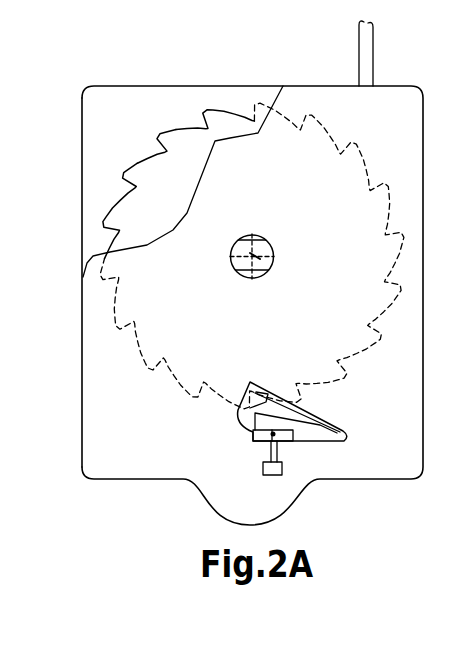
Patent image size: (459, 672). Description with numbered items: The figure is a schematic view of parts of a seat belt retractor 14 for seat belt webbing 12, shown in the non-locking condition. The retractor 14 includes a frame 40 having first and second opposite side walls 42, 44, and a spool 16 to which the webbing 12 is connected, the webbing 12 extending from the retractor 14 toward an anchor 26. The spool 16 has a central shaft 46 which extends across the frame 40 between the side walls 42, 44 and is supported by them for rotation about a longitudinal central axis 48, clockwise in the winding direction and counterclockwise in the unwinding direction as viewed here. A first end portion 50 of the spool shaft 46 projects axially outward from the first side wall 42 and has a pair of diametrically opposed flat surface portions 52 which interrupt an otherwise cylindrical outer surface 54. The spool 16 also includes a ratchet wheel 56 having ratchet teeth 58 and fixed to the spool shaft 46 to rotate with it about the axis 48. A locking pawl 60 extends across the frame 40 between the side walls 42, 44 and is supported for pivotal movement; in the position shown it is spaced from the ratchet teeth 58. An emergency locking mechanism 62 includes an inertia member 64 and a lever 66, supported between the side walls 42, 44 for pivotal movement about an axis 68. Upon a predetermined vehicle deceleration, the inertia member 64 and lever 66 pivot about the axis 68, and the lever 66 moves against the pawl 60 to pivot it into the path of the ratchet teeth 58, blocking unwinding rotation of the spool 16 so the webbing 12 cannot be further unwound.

The seat belt webbing 12 is at (388, 43).
The seat belt retractor 14 is at (233, 266).
The spool 16 is at (124, 167).
The anchor 26 is at (397, 55).
The frame 40 is at (76, 199).
The first side wall 42 is at (223, 226).
The second side wall 44 is at (85, 250).
The central shaft 46 is at (233, 239).
The longitudinal central axis 48 is at (277, 268).
The first end portion 50 is at (229, 256).
The flat surface portions 52 is at (250, 239).
The cylindrical outer surface 54 is at (265, 240).
The ratchet wheel 56 is at (148, 165).
The ratchet teeth 58 is at (208, 110).
The locking pawl 60 is at (318, 428).
The emergency locking mechanism 62 is at (242, 433).
The inertia member 64 is at (264, 470).
The lever 66 is at (240, 404).
The axis 68 is at (285, 443).